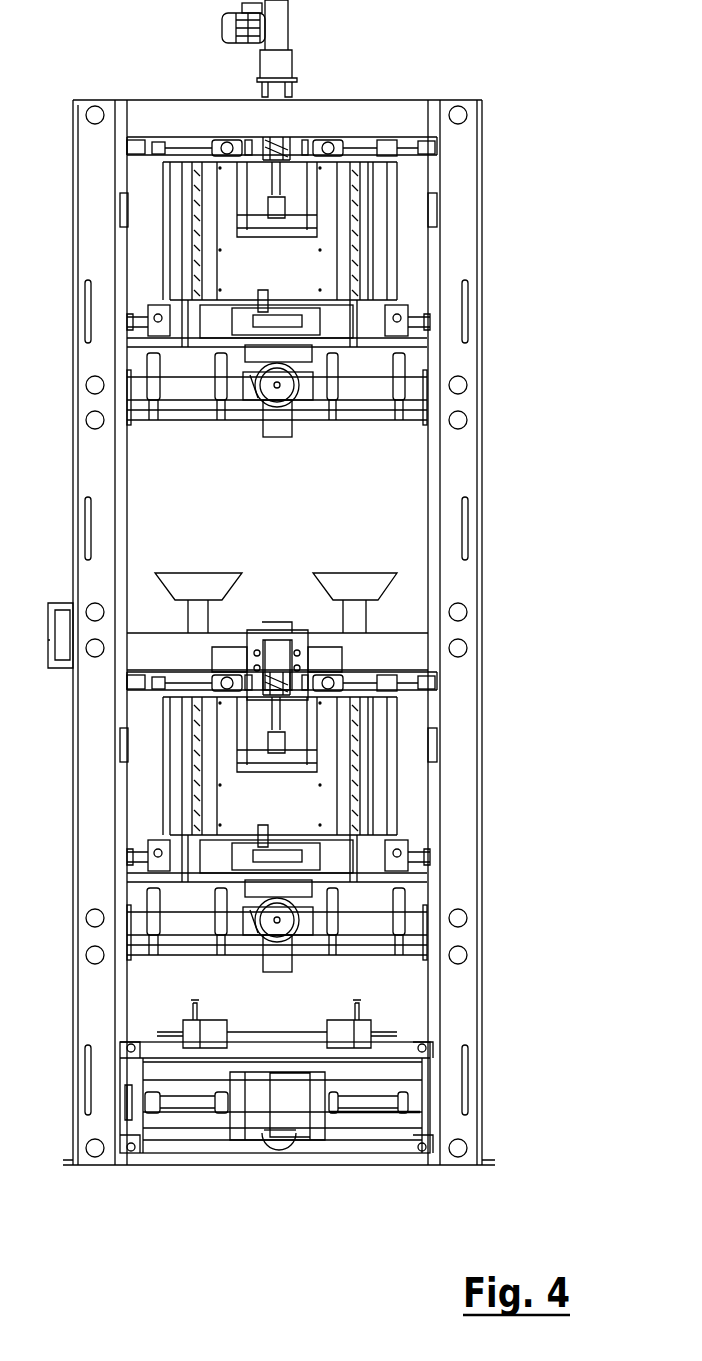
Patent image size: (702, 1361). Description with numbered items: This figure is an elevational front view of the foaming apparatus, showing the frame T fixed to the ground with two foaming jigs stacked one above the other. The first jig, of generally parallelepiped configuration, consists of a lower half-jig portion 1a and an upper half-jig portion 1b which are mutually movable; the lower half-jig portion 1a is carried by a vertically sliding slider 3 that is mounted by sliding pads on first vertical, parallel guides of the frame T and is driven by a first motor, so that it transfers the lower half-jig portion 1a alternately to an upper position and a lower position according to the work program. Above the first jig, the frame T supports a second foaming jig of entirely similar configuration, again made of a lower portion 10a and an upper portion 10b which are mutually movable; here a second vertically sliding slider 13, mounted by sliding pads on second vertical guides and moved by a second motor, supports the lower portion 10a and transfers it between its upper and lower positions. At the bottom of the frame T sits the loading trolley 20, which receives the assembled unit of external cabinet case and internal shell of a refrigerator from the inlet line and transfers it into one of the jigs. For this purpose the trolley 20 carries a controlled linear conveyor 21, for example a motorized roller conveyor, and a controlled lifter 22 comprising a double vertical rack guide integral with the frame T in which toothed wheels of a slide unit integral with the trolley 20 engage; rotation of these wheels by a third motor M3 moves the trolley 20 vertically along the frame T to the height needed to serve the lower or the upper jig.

The frame T is at (470, 125).
The upper portion of second foaming jig 10b is at (355, 159).
The lower portion of second foaming jig 10a is at (393, 247).
The vertically sliding slider 13 is at (367, 360).
The upper half-jig portion 1b is at (360, 686).
The lower half-jig portion 1a is at (404, 770).
The vertically sliding slider 3 is at (370, 892).
The loading trolley 20 is at (413, 1095).
The controlled linear conveyor 21 is at (355, 1027).
The controlled lifter 22 is at (125, 1115).
The third motor M3 is at (278, 1138).